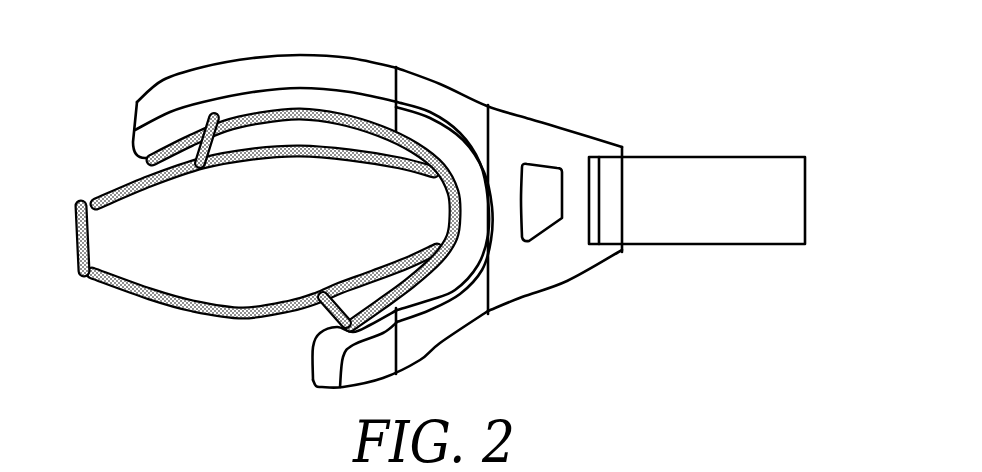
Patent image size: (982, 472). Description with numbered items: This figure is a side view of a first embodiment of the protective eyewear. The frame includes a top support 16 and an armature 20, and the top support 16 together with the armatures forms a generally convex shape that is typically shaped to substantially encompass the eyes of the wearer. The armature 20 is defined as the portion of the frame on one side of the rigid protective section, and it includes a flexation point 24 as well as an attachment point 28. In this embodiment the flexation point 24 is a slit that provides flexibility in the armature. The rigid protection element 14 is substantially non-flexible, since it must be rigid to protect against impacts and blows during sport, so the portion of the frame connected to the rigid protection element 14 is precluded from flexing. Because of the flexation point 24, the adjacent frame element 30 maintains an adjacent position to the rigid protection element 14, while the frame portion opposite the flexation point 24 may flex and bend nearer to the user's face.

The rigid protection element 14 is at (168, 309).
The top support 16 is at (223, 78).
The armature 20 is at (523, 143).
The flexation point 24 is at (483, 256).
The attachment point 28 is at (608, 163).
The adjacent frame element 30 is at (453, 147).